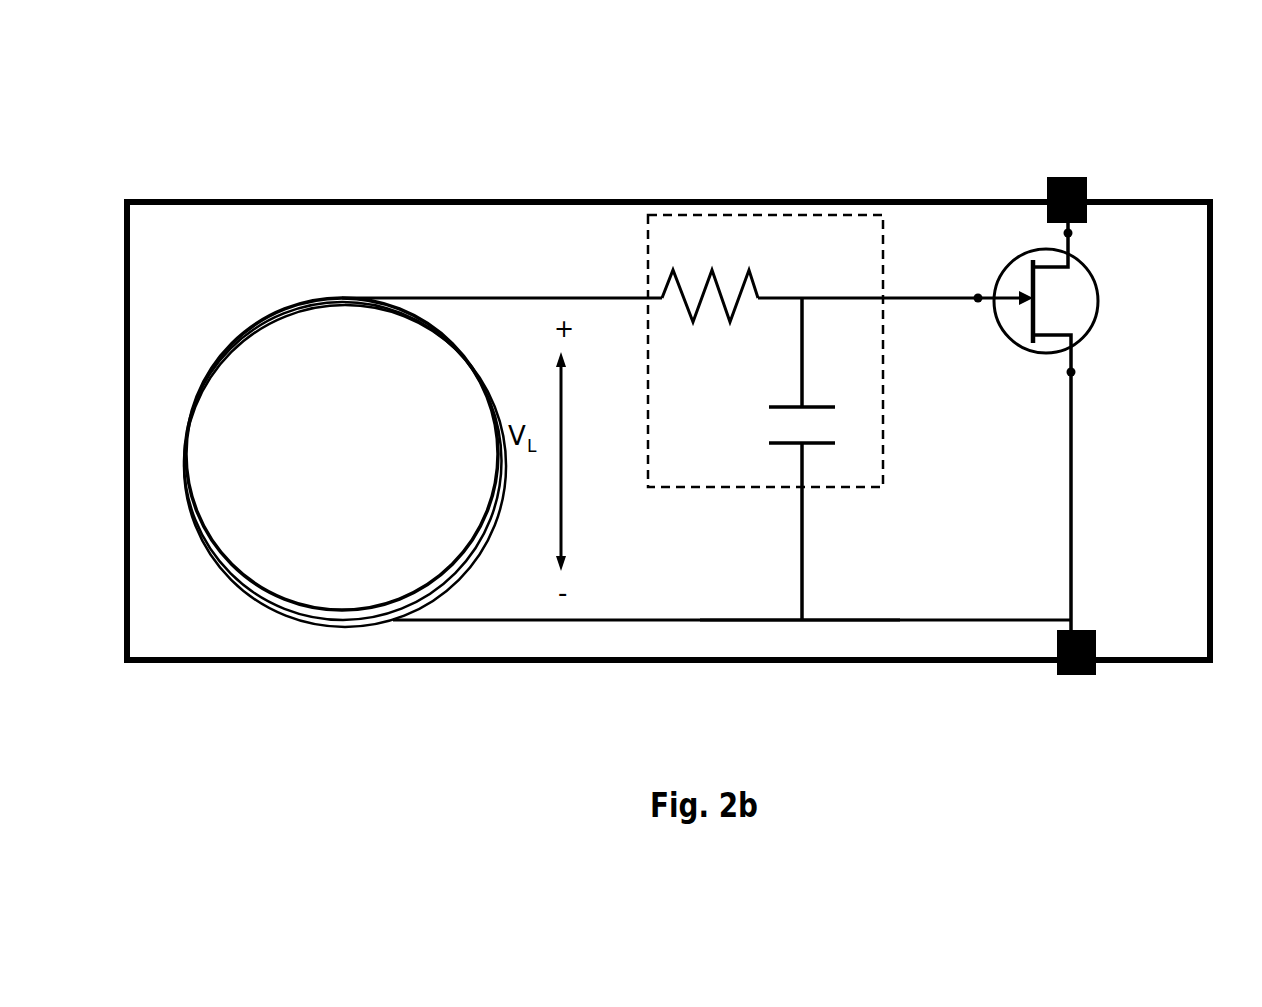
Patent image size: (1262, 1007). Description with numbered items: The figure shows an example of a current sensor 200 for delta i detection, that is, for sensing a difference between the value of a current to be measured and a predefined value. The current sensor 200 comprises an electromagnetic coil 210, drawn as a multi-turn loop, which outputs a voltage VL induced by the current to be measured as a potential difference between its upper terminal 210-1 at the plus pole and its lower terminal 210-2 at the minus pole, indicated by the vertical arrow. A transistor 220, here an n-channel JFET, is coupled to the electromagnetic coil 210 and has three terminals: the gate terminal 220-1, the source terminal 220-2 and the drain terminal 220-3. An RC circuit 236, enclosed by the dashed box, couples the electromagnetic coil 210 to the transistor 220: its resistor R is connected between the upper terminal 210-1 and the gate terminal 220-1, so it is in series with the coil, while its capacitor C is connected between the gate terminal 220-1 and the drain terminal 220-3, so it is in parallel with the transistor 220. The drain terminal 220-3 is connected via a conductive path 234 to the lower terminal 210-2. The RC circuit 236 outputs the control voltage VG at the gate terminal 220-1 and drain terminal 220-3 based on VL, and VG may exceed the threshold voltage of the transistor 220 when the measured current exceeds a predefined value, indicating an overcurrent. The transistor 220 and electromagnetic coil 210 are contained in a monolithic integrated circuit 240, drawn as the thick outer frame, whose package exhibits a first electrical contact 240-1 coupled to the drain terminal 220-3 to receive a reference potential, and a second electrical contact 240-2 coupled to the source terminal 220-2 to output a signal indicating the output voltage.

The current sensor 200 is at (368, 118).
The monolithic integrated circuit 240 is at (235, 200).
The electromagnetic coil 210 is at (256, 323).
The upper terminal of the electromagnetic coil 210-1 is at (390, 297).
The lower terminal of the electromagnetic coil 210-2 is at (427, 624).
The RC circuit 236 is at (825, 214).
The conductive path 234 is at (778, 619).
The transistor 220 is at (1012, 338).
The gate terminal of the transistor 220-1 is at (980, 293).
The source terminal of the transistor 220-2 is at (1073, 233).
The drain terminal of the transistor 220-3 is at (1075, 372).
The first electrical contact 240-1 is at (1068, 177).
The second electrical contact 240-2 is at (1075, 676).